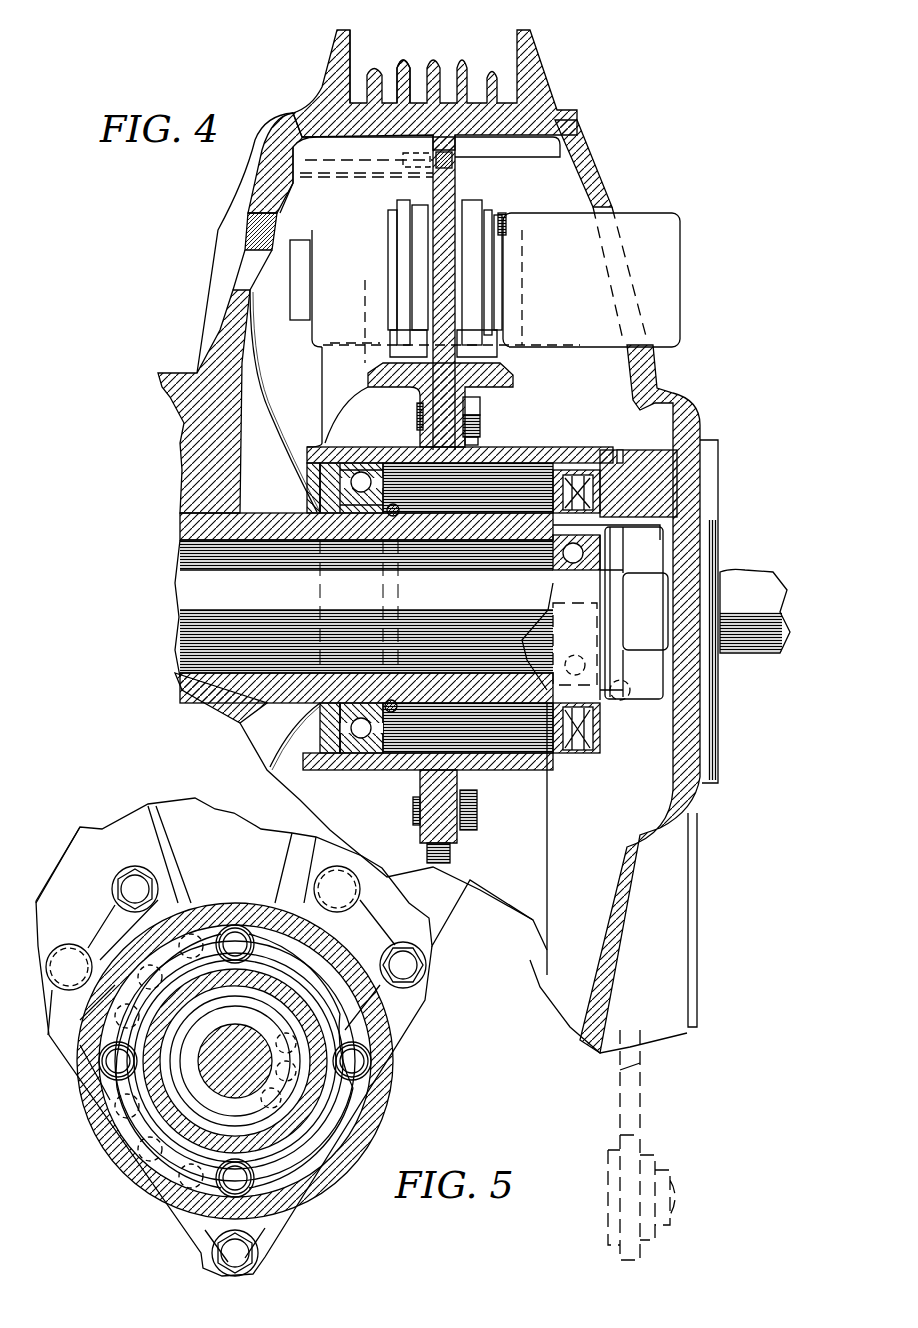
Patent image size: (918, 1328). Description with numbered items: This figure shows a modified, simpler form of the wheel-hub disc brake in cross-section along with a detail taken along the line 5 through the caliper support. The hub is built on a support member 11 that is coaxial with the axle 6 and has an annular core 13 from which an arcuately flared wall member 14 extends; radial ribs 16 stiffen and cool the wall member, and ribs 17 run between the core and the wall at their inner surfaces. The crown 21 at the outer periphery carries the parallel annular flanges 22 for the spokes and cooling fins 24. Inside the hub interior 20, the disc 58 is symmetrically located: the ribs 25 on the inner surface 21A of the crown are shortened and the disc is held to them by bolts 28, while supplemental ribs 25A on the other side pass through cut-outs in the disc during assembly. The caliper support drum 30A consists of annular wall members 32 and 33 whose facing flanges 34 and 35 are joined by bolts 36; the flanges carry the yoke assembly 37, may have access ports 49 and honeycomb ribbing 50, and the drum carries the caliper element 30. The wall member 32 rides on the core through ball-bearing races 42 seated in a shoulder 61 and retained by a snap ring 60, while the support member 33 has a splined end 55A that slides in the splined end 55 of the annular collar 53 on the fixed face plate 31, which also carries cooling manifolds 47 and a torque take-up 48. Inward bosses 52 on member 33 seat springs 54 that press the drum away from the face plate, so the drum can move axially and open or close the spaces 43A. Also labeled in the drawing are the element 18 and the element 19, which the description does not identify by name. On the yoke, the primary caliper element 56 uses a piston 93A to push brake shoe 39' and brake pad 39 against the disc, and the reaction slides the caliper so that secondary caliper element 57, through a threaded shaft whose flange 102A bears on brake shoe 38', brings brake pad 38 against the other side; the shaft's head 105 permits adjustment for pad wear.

In FIG. 4, the section line 5— 5 is at (575, 797).
In FIG. 4, the axle 6 is at (195, 585).
In FIG. 5, the axle 6 is at (235, 1061).
In FIG. 4, the support member 11 is at (735, 230).
In FIG. 4, the annular core 13 is at (275, 515).
In FIG. 5, the annular core 13 is at (110, 1160).
In FIG. 4, the wall member 14 is at (265, 160).
In FIG. 4, the ribs 16 is at (265, 118).
In FIG. 4, the ribs 17 is at (258, 445).
In FIG. 4, the seal 18 is at (555, 565).
In FIG. 5, the seal 18 is at (150, 1195).
In FIG. 4, the cover rim 19 is at (245, 265).
In FIG. 4, the interior of the hub 20 is at (295, 205).
In FIG. 4, the crown 21 is at (367, 52).
In FIG. 4, the inner surface of the crown 21A is at (525, 140).
In FIG. 4, the annular flanges 22 is at (337, 42).
In FIG. 4, the cooling fins 24 is at (405, 60).
In FIG. 4, the ribs 25 is at (345, 178).
In FIG. 4, the supplemental ribs 25A is at (483, 160).
In FIG. 4, the bolts 28 is at (400, 180).
In FIG. 4, the caliper element 30 is at (401, 441).
In FIG. 4, the caliper support drum 30A is at (356, 771).
In FIG. 4, the face plate 31 is at (650, 395).
In FIG. 4, the annular wall member 32 is at (393, 772).
In FIG. 4, the annular support member 33 is at (478, 520).
In FIG. 5, the annular support member 33 is at (88, 1128).
In FIG. 4, the flange 34 is at (480, 433).
In FIG. 4, the flange 35 is at (483, 405).
In FIG. 4, the bolts 36 is at (421, 429).
In FIG. 5, the bolts 36 is at (115, 889).
In FIG. 4, the yoke assembly 37 is at (366, 385).
In FIG. 4, the brake pad 38 is at (388, 278).
In FIG. 4, the brake shoe 38' is at (381, 267).
In FIG. 4, the brake pad 39 is at (497, 278).
In FIG. 4, the brake shoe 39' is at (524, 272).
In FIG. 4, the ball-bearing races 42 is at (357, 515).
In FIG. 5, the ball-bearing races 42 is at (318, 1165).
In FIG. 4, the spaces 43A is at (622, 452).
In FIG. 4, the cooling manifolds 47 is at (680, 940).
In FIG. 4, the torque take-up 48 is at (642, 1105).
In FIG. 4, the access ports 49 is at (215, 812).
In FIG. 5, the honeycomb ribbing 50 is at (78, 880).
In FIG. 4, the bosses 52 is at (558, 470).
In FIG. 5, the bosses 52 is at (230, 926).
In FIG. 4, the annular collar 53 is at (700, 487).
In FIG. 4, the springs 54 is at (655, 518).
In FIG. 5, the springs 54 is at (250, 924).
In FIG. 4, the splined end 55 is at (612, 550).
In FIG. 4, the splined end 55A is at (650, 628).
In FIG. 4, the primary caliper element 56 is at (660, 298).
In FIG. 4, the secondary caliper element 57 is at (350, 330).
In FIG. 4, the disc 58 is at (440, 863).
In FIG. 4, the snap ring 60 is at (398, 520).
In FIG. 5, the snap ring 60 is at (325, 1120).
In FIG. 4, the shoulder 61 is at (385, 445).
In FIG. 4, the piston 93A is at (498, 302).
In FIG. 4, the flange 102A is at (392, 295).
In FIG. 4, the head 105 is at (298, 305).